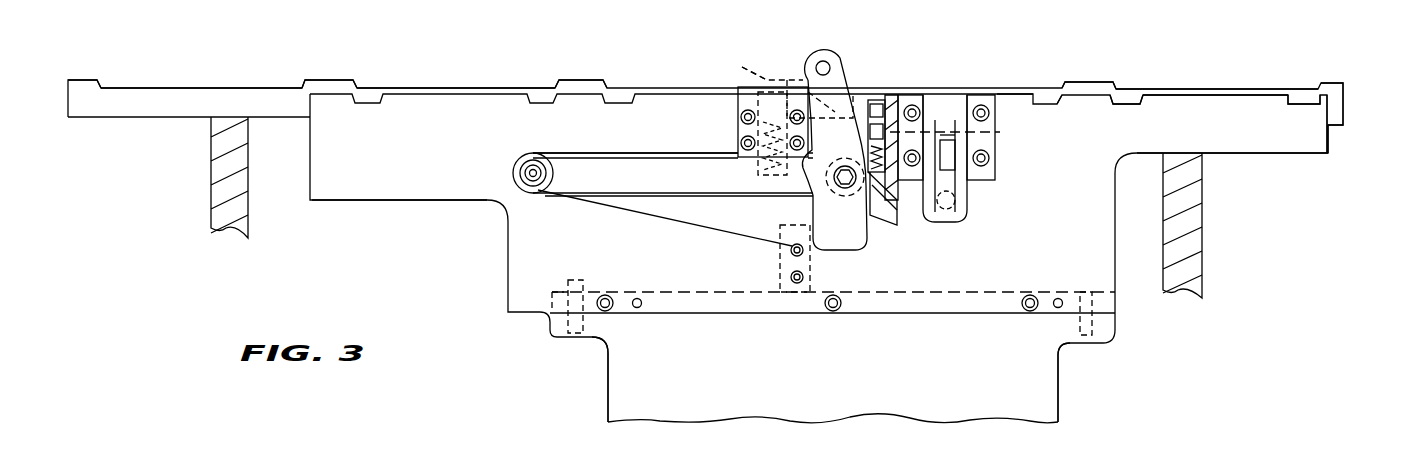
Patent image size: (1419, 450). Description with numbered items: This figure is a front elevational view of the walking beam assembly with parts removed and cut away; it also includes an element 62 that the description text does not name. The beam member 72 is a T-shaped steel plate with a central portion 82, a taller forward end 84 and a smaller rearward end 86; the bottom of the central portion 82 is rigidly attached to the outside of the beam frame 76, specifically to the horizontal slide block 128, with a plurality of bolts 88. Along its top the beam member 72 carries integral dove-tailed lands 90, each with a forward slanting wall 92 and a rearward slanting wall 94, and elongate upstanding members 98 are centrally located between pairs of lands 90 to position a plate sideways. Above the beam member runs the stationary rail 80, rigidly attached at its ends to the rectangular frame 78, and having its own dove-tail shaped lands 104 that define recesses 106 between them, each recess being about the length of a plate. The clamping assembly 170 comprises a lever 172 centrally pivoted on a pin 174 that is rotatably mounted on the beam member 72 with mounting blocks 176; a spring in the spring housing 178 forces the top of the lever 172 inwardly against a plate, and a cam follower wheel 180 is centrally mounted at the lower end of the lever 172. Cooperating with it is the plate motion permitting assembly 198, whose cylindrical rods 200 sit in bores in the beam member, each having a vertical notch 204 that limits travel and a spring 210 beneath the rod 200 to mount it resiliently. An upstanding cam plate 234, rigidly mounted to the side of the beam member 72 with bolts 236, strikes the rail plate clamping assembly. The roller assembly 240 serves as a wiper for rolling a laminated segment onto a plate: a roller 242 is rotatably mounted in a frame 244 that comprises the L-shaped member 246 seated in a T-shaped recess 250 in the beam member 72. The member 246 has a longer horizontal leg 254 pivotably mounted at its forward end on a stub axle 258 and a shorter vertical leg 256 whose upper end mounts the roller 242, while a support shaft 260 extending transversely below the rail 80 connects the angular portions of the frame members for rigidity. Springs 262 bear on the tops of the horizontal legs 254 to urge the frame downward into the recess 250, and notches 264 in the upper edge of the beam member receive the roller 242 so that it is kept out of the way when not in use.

The clamp bar 62 is at (670, 78).
The beam member 72 is at (1330, 146).
The beam frame 76 is at (604, 374).
The frame 78 is at (210, 170).
The rail 80 is at (1344, 108).
The central portion 82 is at (507, 263).
The forward end 84 is at (395, 205).
The rearward end 86 is at (1273, 155).
The bolts 88 is at (608, 297).
The lands 90 is at (1082, 96).
The forward slanting wall 92 is at (1058, 104).
The rearward slanting wall 94 is at (1122, 105).
The upstanding members 98 is at (1017, 96).
The lands 104 is at (88, 80).
The recesses 106 is at (222, 88).
The horizontal slide block 128 is at (886, 390).
The clamping assembly 170 is at (970, 87).
The lever 172 is at (968, 210).
The pin 174 is at (1000, 132).
The mounting blocks 176 is at (914, 104).
The spring housing 178 is at (952, 208).
The cam follower wheel 180 is at (958, 170).
The plate motion permitting assembly 198 is at (888, 100).
The cylindrical rods 200 is at (877, 104).
The vertical notch 204 is at (872, 78).
The spring 210 is at (880, 190).
The cam plate 234 is at (780, 255).
The bolts 236 is at (806, 277).
The roller assembly 240 is at (820, 46).
The roller 242 is at (817, 64).
The frame 244 is at (763, 202).
The L-shaped member 246 is at (648, 152).
The T-shaped recess 250 is at (660, 214).
The horizontal leg 254 is at (572, 167).
The vertical leg 256 is at (850, 95).
The stub axle 258 is at (530, 173).
The support shaft 260 is at (845, 190).
The springs 262 is at (740, 127).
The notches 264 is at (742, 67).